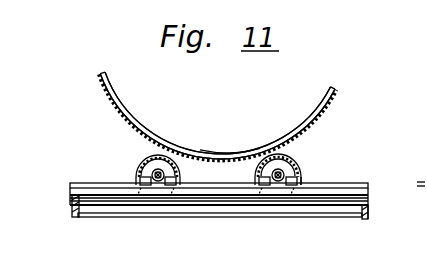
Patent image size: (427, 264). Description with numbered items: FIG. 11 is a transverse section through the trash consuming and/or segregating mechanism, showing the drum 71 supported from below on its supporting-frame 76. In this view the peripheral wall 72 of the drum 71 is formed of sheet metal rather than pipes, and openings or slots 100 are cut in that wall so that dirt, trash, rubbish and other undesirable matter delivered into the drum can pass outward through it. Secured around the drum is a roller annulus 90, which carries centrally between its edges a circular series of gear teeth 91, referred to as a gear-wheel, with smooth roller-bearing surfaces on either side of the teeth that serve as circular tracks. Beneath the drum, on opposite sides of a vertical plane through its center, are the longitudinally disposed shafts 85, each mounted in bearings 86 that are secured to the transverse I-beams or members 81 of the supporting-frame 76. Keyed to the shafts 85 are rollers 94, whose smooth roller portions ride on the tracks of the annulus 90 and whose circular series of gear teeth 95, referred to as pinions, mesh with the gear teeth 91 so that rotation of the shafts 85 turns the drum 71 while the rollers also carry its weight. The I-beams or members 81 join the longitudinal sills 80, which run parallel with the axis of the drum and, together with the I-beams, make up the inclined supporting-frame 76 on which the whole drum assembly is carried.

The drum 71 is at (297, 126).
The open-work peripheral wall 72 is at (110, 98).
The roller annuli 90 is at (316, 124).
The gear teeth 91 is at (335, 101).
The openings or slots 100 is at (232, 157).
The shafts 85 is at (141, 167).
The bearings 86 is at (182, 174).
The rollers 94 is at (170, 150).
The gear teeth 95 is at (318, 170).
The transverse I-beams or members 81 is at (337, 194).
The longitudinal sills 80 is at (71, 207).
The supporting-frame 76 is at (370, 211).